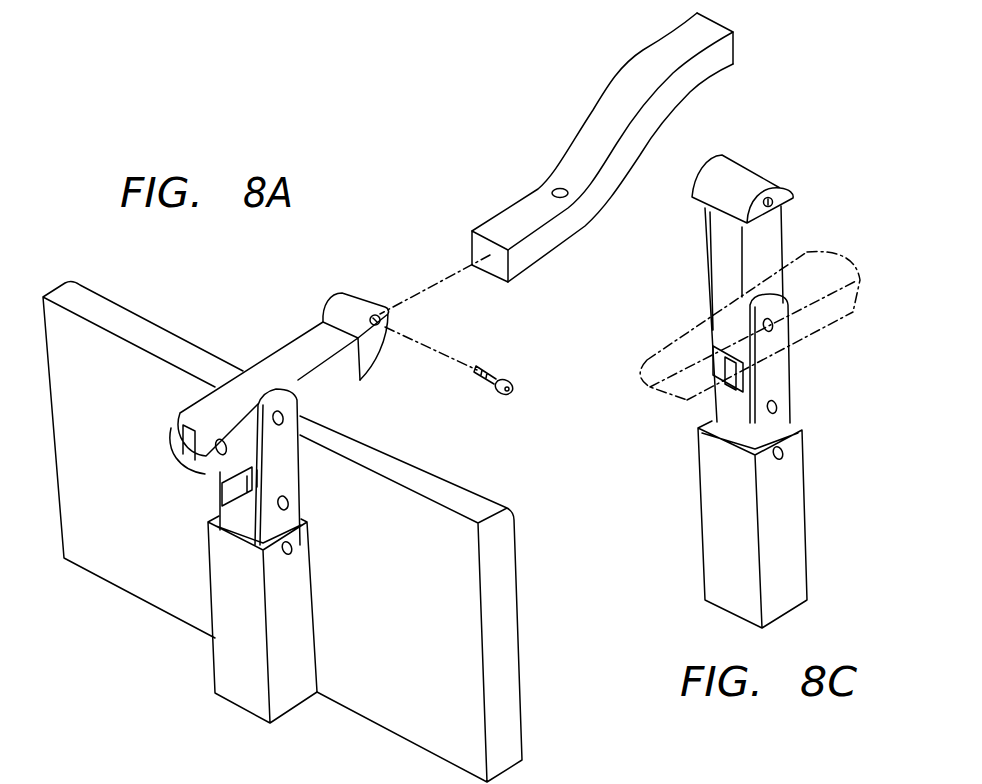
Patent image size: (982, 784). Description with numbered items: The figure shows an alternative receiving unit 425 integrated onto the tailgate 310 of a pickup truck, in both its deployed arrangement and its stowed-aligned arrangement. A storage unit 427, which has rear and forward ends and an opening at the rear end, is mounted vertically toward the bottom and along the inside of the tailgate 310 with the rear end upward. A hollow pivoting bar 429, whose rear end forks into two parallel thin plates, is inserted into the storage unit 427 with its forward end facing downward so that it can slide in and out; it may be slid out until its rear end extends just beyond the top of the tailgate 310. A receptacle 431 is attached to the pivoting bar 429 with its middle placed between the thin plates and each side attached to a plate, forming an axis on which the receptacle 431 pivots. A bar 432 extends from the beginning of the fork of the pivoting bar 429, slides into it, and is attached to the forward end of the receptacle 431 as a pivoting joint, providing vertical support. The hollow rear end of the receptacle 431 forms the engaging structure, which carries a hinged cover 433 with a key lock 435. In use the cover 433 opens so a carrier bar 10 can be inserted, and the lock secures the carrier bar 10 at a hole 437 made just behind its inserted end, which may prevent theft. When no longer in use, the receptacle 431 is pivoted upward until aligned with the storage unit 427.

In FIG. 8A, the carrier bar 10 is at (525, 212).
In FIG. 8A, the tailgate 310 is at (115, 315).
In FIG. 8A, the receiving unit 425 is at (247, 324).
In FIG. 8A, the storage unit 427 is at (225, 655).
In FIG. 8C, the storage unit 427 is at (717, 523).
In FIG. 8A, the pivoting bar 429 is at (290, 466).
In FIG. 8C, the pivoting bar 429 is at (787, 407).
In FIG. 8A, the receptacle 431 is at (197, 416).
In FIG. 8C, the receptacle 431 is at (717, 264).
In FIG. 8A, the bar 432 is at (235, 478).
In FIG. 8C, the bar 432 is at (730, 375).
In FIG. 8A, the cover 433 is at (354, 302).
In FIG. 8C, the cover 433 is at (745, 177).
In FIG. 8A, the keyhole lock 435 is at (380, 316).
In FIG. 8A, the hole 437 is at (560, 187).